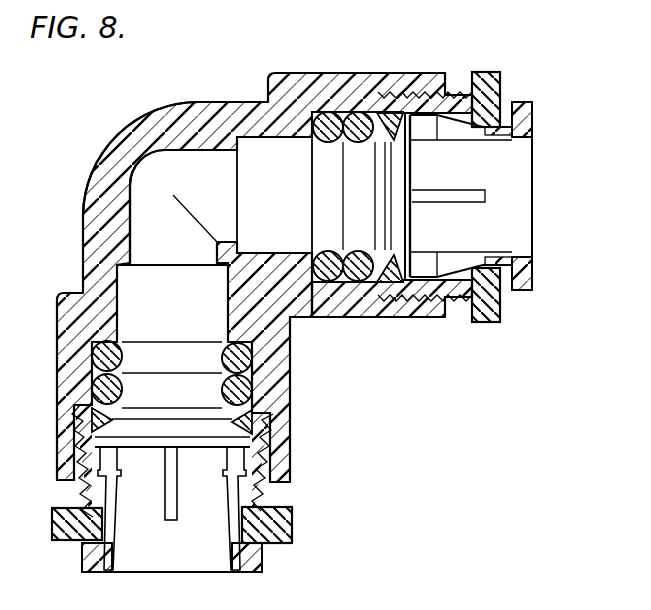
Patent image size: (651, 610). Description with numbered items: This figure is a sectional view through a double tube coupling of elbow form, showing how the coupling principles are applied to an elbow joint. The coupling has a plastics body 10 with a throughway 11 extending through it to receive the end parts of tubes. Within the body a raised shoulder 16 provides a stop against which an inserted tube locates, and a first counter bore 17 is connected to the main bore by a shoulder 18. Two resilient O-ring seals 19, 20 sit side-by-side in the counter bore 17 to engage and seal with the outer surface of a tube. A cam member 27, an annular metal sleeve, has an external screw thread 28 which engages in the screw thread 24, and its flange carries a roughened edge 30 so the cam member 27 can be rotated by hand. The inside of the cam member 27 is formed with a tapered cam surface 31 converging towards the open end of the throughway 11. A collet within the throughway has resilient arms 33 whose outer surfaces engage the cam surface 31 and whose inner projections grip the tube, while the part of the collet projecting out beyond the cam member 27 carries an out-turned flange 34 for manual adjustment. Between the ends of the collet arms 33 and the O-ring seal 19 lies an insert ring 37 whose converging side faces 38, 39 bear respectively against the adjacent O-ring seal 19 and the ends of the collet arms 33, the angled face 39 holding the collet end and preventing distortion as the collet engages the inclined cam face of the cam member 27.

The body 10 is at (97, 217).
The throughway 11 is at (150, 173).
The raised shoulder 16 is at (213, 137).
The shoulder 18 is at (307, 125).
The first counter bore 17 is at (340, 112).
The O-ring seal 19 is at (327, 115).
The O-ring seal 20 is at (365, 113).
The cam member 27 is at (418, 108).
The screw thread 24 is at (405, 290).
The external screw thread 28 is at (398, 285).
The edge of flange 30 is at (485, 72).
The tapered cam surface 31 is at (450, 277).
The resilient arms 33 is at (423, 173).
The out-turned flange 34 is at (532, 110).
The insert ring 37 is at (390, 262).
The side face 38 is at (385, 250).
The angled face 39 is at (398, 250).